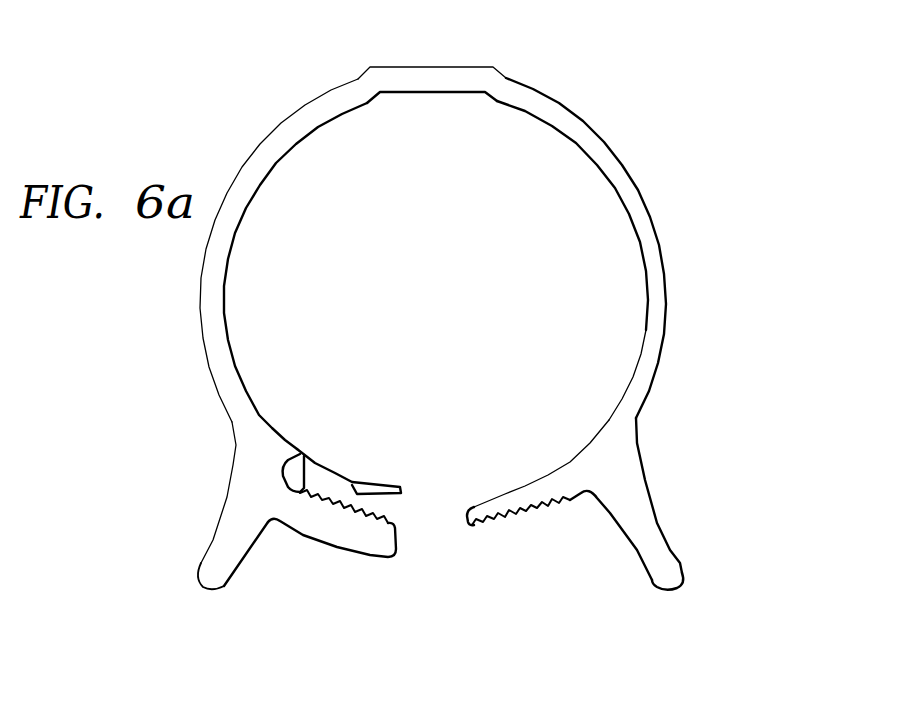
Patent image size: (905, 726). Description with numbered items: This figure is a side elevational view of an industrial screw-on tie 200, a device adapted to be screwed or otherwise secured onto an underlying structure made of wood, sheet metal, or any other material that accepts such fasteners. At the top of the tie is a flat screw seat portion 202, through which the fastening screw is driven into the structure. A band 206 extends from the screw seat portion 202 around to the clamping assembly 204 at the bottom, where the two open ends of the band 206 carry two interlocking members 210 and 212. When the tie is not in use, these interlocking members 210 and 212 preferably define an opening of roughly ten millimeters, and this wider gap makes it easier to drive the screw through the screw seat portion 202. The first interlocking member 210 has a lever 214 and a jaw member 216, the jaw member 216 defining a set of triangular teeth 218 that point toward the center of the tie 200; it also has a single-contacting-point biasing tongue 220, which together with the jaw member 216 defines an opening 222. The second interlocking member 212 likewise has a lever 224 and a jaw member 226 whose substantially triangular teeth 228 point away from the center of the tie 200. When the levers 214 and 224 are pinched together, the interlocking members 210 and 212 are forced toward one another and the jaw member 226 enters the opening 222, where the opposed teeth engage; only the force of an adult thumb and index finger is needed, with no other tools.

The screw-on tie 200 is at (692, 94).
The flat screw seat portion 202 is at (472, 56).
The clamping assembly 204 is at (193, 490).
The band 206 is at (272, 142).
The interlocking member 210 is at (288, 597).
The interlocking member 212 is at (602, 589).
The lever 214 is at (200, 574).
The jaw member 216 is at (384, 553).
The triangular teeth 218 is at (300, 455).
The single-contacting-point biasing tongue 220 is at (382, 483).
The opening 222 is at (407, 526).
The lever 224 is at (688, 574).
The jaw member 226 is at (472, 506).
The triangular teeth 228 is at (547, 534).